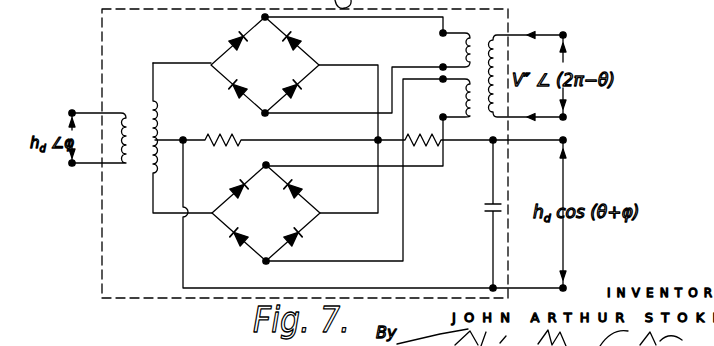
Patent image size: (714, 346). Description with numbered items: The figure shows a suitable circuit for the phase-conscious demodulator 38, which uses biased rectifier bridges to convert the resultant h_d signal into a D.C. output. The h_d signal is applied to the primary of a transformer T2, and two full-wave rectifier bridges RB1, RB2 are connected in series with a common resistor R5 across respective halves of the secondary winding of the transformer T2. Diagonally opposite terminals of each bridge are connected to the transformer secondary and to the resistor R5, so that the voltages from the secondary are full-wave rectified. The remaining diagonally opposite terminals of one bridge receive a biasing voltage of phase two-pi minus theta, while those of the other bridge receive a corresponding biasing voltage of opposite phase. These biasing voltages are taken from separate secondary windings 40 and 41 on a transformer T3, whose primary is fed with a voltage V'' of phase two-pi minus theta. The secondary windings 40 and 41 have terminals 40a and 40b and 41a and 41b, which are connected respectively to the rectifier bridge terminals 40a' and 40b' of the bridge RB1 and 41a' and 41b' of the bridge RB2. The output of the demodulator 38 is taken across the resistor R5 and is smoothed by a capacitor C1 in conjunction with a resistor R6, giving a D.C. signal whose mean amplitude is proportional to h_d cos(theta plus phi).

The phase-conscious demodulator 38 is at (102, 40).
The transformer T2 is at (142, 138).
The transformer T3 is at (518, 65).
The secondary winding 40 is at (463, 46).
The secondary winding 41 is at (466, 97).
The terminal 40a is at (355, 30).
The terminal 40b is at (355, 81).
The terminal 41a is at (372, 140).
The terminal 41b is at (356, 168).
The rectifier bridge terminal 40a' is at (240, 21).
The rectifier bridge terminal 40b' is at (243, 116).
The rectifier bridge terminal 41a' is at (283, 158).
The rectifier bridge terminal 41b' is at (248, 272).
The full-wave rectifier bridge RB1 is at (318, 70).
The full-wave rectifier bridge RB2 is at (318, 203).
The common resistor R5 is at (280, 151).
The resistor R6 is at (435, 154).
The capacitor C1 is at (475, 214).